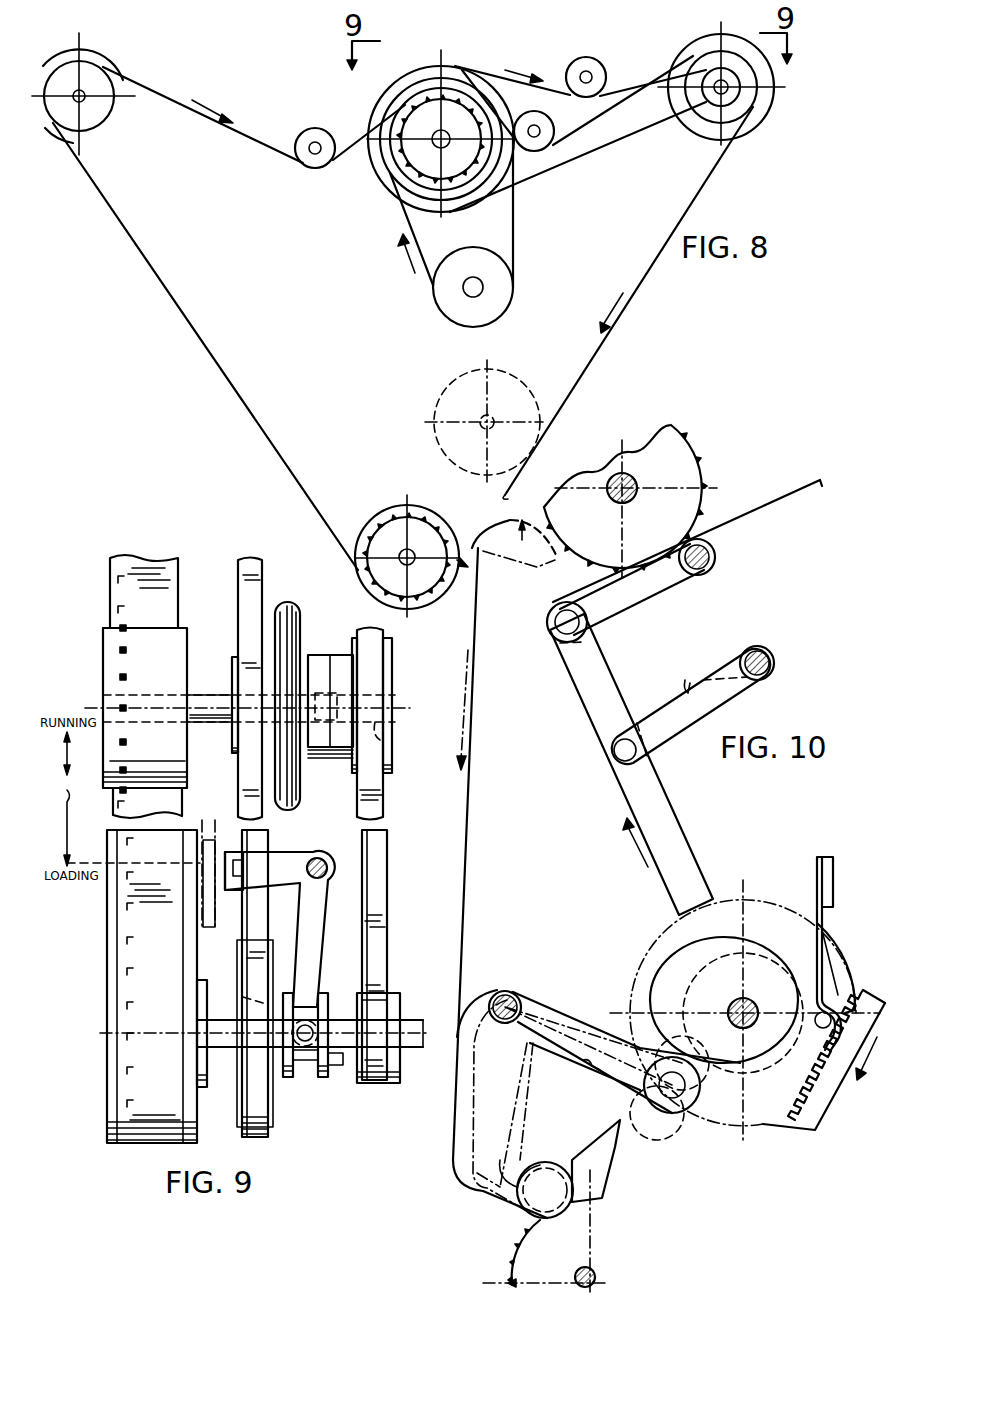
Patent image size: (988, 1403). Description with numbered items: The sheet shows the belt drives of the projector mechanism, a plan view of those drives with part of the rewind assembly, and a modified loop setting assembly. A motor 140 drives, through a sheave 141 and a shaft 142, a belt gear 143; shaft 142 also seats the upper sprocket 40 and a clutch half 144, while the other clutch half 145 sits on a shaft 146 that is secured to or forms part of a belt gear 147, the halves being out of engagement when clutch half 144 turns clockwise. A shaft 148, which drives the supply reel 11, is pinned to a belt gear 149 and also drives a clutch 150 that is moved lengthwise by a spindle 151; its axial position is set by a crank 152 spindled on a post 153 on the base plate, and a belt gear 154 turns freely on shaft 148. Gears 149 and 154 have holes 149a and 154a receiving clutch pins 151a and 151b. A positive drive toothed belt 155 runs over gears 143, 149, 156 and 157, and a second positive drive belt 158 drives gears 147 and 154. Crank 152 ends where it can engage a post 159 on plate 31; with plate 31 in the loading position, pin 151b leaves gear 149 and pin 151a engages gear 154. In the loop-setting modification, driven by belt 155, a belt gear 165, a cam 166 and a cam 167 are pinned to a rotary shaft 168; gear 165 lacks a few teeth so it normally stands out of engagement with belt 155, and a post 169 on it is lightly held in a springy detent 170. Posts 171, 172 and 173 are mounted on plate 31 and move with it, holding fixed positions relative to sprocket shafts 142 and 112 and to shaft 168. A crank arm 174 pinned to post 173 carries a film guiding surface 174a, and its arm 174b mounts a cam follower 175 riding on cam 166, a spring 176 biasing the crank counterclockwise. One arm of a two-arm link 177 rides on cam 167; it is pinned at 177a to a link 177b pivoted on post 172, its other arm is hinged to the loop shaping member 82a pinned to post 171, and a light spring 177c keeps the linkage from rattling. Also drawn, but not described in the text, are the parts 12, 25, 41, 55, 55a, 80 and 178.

In FIG. 8, the supply reel 11 is at (760, 123).
In FIG. 9, the supply reel 11 is at (110, 983).
In FIG. 8, the supply pulley 12 is at (103, 147).
In FIG. 9, the film strip 25 is at (125, 592).
In FIG. 10, the film strip 25 is at (773, 507).
In FIG. 9, the plate 31 is at (205, 930).
In FIG. 8, the upper sprocket 40 is at (417, 170).
In FIG. 9, the upper sprocket 40 is at (112, 685).
In FIG. 10, the upper sprocket 40 is at (692, 468).
In FIG. 8, the gear segment 41 is at (388, 530).
In FIG. 10, the gear segment 41 is at (518, 1265).
In FIG. 10, the roller guide 55 is at (598, 1165).
In FIG. 10, the roller 55a is at (535, 1198).
In FIG. 10, the arm 80 is at (673, 588).
In FIG. 10, the loop shaping member 82a is at (507, 581).
In FIG. 8, the sprocket shaft 112 is at (402, 560).
In FIG. 10, the sprocket shaft 112 is at (585, 1268).
In FIG. 8, the motor 140 is at (498, 293).
In FIG. 8, the sheave 141 is at (405, 83).
In FIG. 9, the sheave 141 is at (300, 617).
In FIG. 8, the shaft 142 is at (432, 146).
In FIG. 9, the shaft 142 is at (200, 695).
In FIG. 10, the shaft 142 is at (630, 500).
In FIG. 8, the belt gear 143 is at (447, 77).
In FIG. 9, the belt gear 143 is at (238, 753).
In FIG. 9, the clutch half 144 is at (317, 660).
In FIG. 9, the clutch half 145 is at (338, 760).
In FIG. 9, the shaft 146 is at (395, 742).
In FIG. 8, the belt gear 147 is at (507, 173).
In FIG. 9, the belt gear 147 is at (392, 665).
In FIG. 9, the shaft 148 is at (223, 1053).
In FIG. 8, the belt gear 149 is at (713, 125).
In FIG. 9, the belt gear 149 is at (273, 1117).
In FIG. 9, the hole 149a is at (243, 997).
In FIG. 9, the clutch 150 is at (310, 1060).
In FIG. 9, the spindle 151 is at (327, 1032).
In FIG. 9, the clutch pin 151a is at (335, 1065).
In FIG. 9, the clutch pin 151b is at (287, 983).
In FIG. 9, the crank 152 is at (318, 917).
In FIG. 9, the post 153 is at (330, 865).
In FIG. 8, the belt gear 154 is at (700, 75).
In FIG. 9, the belt gear 154 is at (395, 1000).
In FIG. 9, the hole 154a is at (380, 1083).
In FIG. 8, the positive drive belt 155 is at (630, 302).
In FIG. 9, the positive drive belt 155 is at (242, 590).
In FIG. 10, the positive drive belt 155 is at (817, 1120).
In FIG. 8, the gear 156 is at (415, 512).
In FIG. 8, the gear 157 is at (110, 113).
In FIG. 8, the second belt 158 is at (588, 163).
In FIG. 9, the second belt 158 is at (390, 895).
In FIG. 9, the post 159 is at (225, 858).
In FIG. 10, the belt gear 165 is at (643, 947).
In FIG. 10, the cam 166 is at (648, 990).
In FIG. 10, the cam 167 is at (803, 913).
In FIG. 8, the rotary shaft 168 is at (478, 425).
In FIG. 10, the rotary shaft 168 is at (732, 1030).
In FIG. 10, the post 169 is at (820, 1030).
In FIG. 10, the springy detent 170 is at (827, 957).
In FIG. 10, the post 171 is at (707, 570).
In FIG. 10, the post 172 is at (773, 655).
In FIG. 10, the post 173 is at (510, 993).
In FIG. 10, the crank arm 174 is at (450, 1112).
In FIG. 10, the film guiding surface 174a is at (450, 1160).
In FIG. 10, the arm 174b is at (600, 1016).
In FIG. 10, the cam follower 175 is at (672, 1113).
In FIG. 10, the spring 176 is at (583, 1068).
In FIG. 10, the two-arm link 177 is at (662, 808).
In FIG. 10, the pin 177a is at (617, 767).
In FIG. 10, the link 177b is at (663, 705).
In FIG. 10, the light spring 177c is at (702, 657).
In FIG. 10, the guide 178 is at (857, 1007).